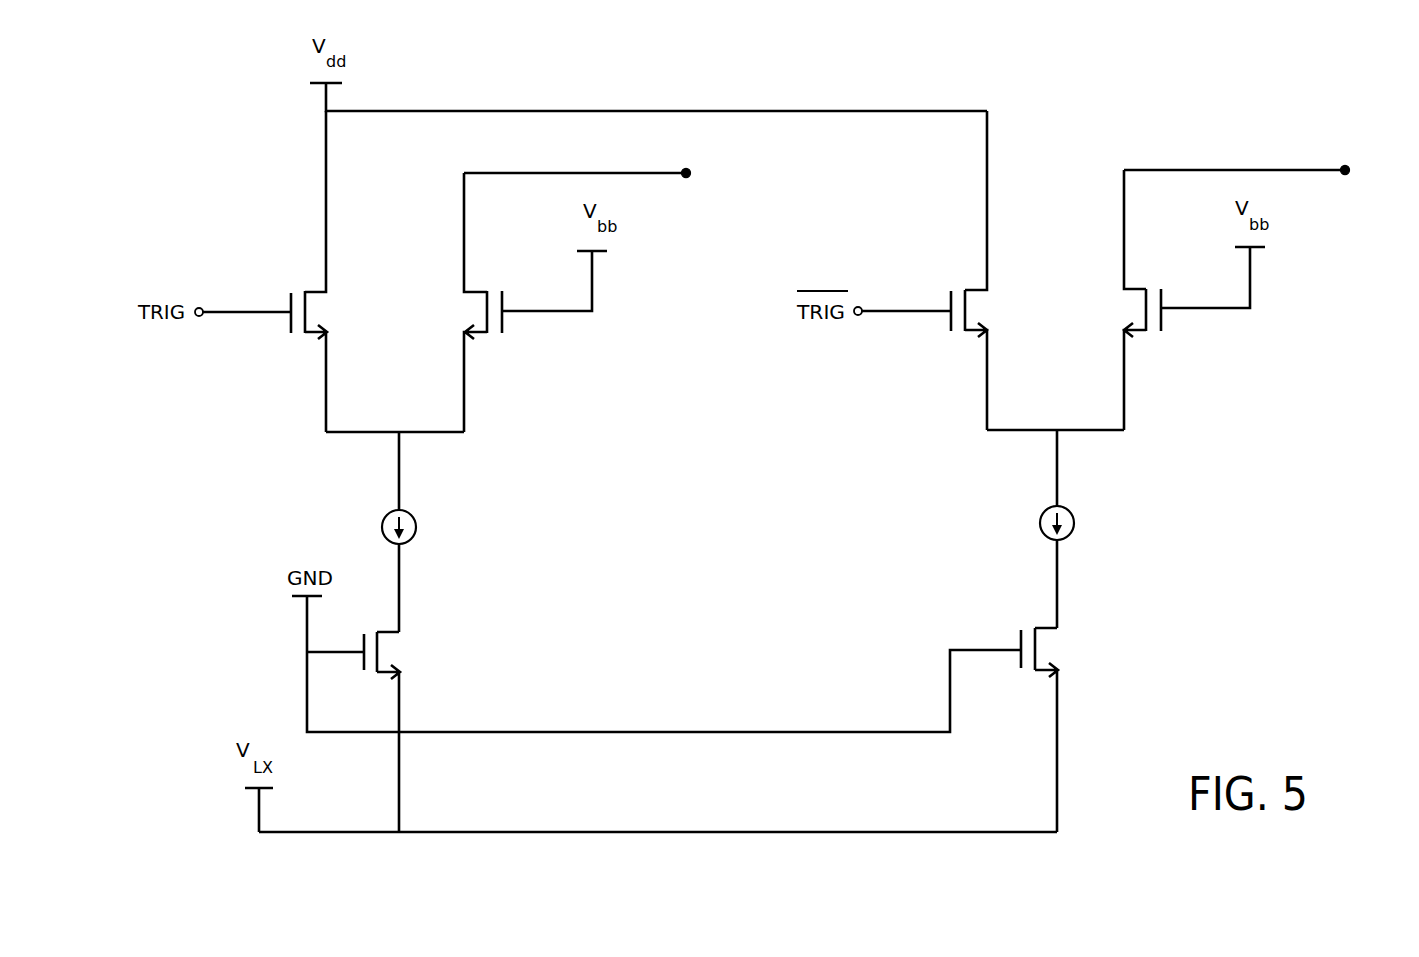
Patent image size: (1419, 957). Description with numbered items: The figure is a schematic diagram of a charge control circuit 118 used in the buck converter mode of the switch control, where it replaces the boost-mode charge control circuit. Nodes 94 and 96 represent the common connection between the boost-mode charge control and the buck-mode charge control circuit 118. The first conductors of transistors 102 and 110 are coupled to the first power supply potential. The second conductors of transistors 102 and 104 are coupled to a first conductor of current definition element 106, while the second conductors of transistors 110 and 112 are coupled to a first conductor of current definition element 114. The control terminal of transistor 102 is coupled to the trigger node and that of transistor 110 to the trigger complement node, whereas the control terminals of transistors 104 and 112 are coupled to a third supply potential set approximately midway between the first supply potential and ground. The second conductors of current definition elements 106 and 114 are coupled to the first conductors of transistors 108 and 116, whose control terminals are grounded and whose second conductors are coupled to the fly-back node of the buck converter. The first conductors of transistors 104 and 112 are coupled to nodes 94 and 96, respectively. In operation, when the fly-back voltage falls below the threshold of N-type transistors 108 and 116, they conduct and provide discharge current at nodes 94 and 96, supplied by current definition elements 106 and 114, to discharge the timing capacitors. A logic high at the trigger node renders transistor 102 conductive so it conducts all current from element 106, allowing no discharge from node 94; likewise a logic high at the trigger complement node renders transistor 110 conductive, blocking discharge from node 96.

The node 94 is at (689, 169).
The node 96 is at (1349, 166).
The transistor 102 is at (320, 295).
The transistor 104 is at (475, 295).
The current definition element 106 is at (418, 528).
The transistor 108 is at (390, 635).
The transistor 110 is at (982, 293).
The transistor 112 is at (1133, 293).
The current definition element 114 is at (1075, 527).
The transistor 116 is at (1047, 632).
The charge control circuit 118 is at (572, 878).